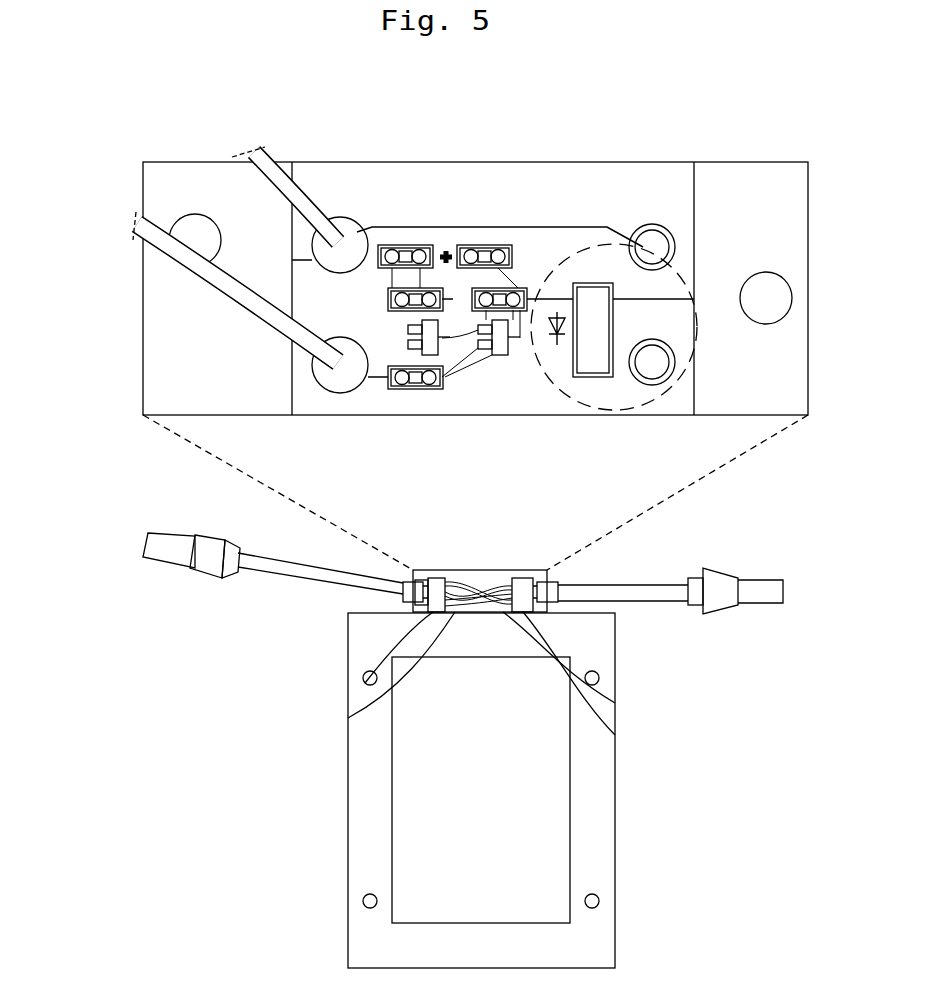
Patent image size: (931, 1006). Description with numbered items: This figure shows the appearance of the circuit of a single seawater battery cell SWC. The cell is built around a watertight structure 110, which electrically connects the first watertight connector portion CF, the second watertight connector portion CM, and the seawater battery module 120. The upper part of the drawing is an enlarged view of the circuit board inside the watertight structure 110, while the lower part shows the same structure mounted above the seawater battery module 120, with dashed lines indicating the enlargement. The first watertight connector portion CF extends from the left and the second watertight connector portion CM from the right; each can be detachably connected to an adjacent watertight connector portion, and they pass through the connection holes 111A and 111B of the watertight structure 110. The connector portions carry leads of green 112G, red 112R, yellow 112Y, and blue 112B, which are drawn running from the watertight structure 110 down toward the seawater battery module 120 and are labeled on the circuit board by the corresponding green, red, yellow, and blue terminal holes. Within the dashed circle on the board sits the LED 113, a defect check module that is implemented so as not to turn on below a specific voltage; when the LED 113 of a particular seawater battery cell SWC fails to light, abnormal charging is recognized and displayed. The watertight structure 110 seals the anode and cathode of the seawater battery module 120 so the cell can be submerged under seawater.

The watertight structure 110 is at (143, 343).
The LED 113 is at (592, 246).
The connection hole 111A is at (407, 602).
The connection hole 111B is at (562, 585).
The yellow lead 112Y is at (363, 680).
The blue lead 112B is at (350, 718).
The green lead 112G is at (605, 698).
The red lead 112R is at (605, 733).
The seawater battery module 120 is at (555, 782).
The first watertight connector portion CF is at (210, 560).
The second watertight connector portion CM is at (720, 600).
The seawater battery cell SWC is at (290, 794).